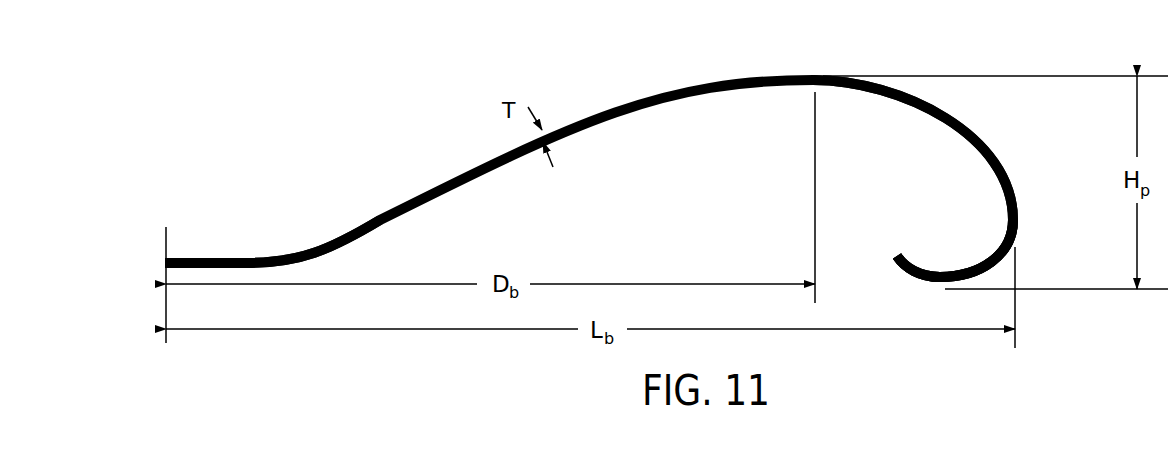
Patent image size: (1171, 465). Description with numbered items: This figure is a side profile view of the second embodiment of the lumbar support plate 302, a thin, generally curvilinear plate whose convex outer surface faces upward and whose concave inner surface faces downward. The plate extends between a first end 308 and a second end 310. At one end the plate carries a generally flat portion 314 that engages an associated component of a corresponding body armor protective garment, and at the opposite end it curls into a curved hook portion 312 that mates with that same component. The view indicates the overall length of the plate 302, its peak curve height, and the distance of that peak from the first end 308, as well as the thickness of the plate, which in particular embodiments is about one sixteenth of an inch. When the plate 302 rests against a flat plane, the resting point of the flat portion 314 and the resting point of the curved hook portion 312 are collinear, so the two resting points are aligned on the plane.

The lumbar support plate 302 is at (620, 107).
The first end 308 is at (173, 227).
The second end 310 is at (1013, 213).
The curved hook portion 312 is at (983, 265).
The flat portion 314 is at (228, 258).